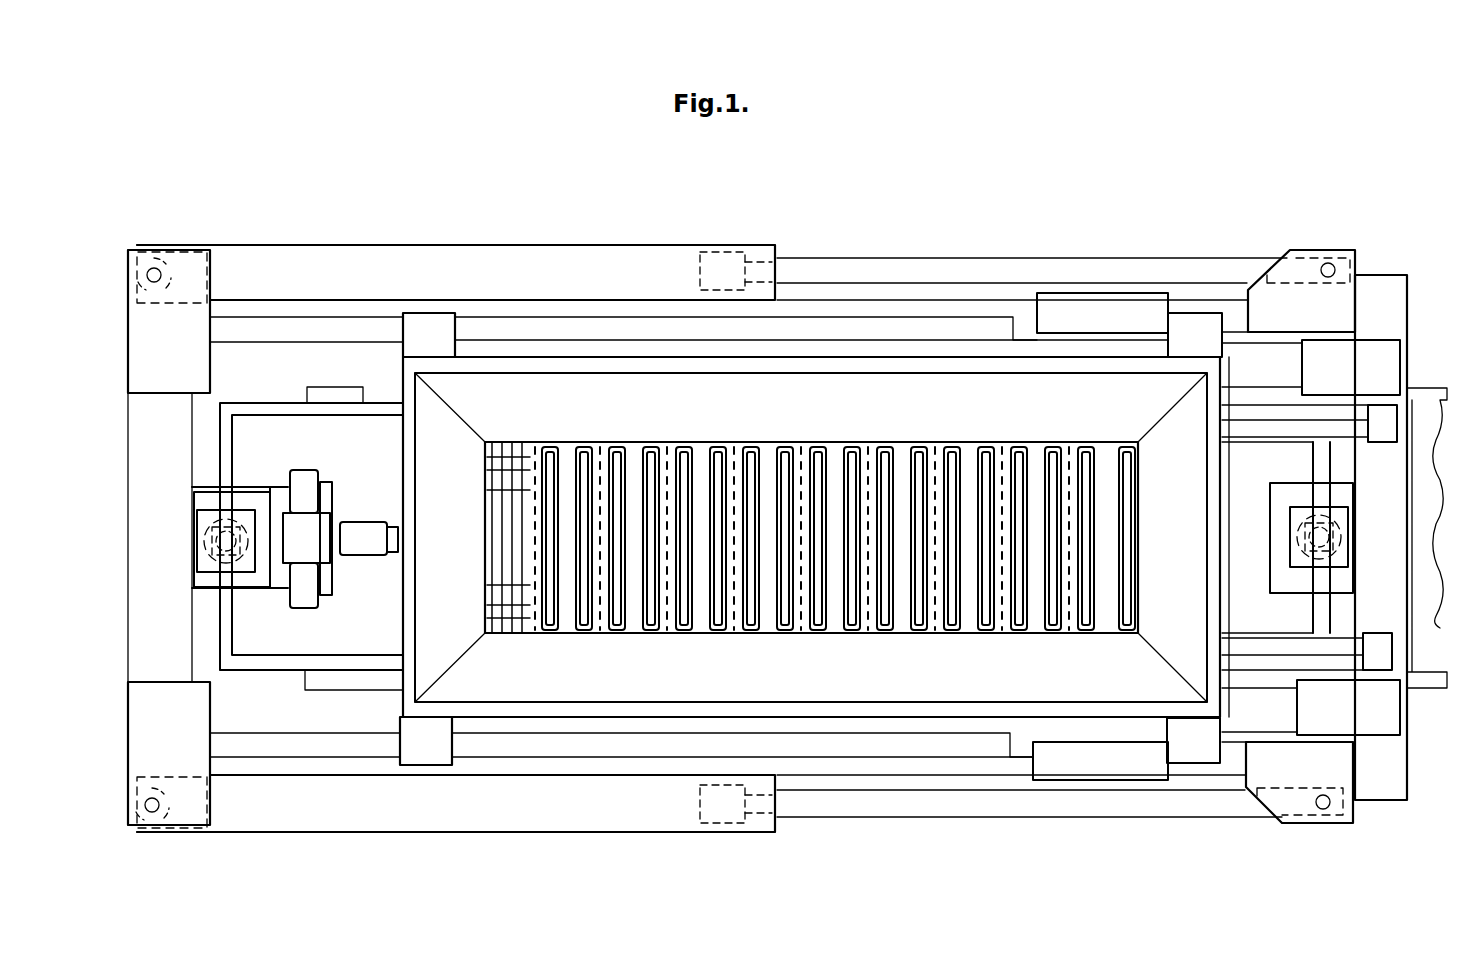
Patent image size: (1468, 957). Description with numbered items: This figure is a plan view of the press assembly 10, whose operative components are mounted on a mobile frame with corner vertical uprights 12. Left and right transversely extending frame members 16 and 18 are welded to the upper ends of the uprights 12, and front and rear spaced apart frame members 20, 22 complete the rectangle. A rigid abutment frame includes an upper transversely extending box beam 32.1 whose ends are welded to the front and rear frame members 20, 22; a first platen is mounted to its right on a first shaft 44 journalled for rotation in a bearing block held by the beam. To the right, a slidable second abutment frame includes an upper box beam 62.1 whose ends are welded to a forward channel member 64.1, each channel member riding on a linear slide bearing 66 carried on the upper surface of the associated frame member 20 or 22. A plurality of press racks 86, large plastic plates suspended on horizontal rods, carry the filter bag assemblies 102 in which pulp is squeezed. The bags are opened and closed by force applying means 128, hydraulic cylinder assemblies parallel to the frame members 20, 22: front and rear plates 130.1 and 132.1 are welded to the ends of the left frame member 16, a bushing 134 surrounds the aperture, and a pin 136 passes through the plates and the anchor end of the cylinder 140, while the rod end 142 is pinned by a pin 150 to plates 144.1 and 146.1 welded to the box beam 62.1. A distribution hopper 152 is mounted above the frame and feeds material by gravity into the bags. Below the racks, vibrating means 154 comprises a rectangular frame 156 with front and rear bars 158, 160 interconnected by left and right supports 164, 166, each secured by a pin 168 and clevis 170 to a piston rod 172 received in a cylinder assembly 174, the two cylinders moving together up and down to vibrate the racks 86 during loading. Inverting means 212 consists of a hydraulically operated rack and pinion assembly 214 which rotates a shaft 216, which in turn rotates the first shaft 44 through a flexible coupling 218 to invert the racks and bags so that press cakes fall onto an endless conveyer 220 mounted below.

The press assembly 10 is at (1208, 148).
The corner vertical uprights 12 is at (816, 537).
The left transversely extending frame member 16 is at (139, 430).
The right transversely extending frame member 18 is at (1395, 290).
The front frame member 20 is at (878, 745).
The rear frame member 22 is at (902, 320).
The upper transversely extending box beam 32.1 is at (428, 318).
The first shaft 44 is at (374, 514).
The upper transversely extending box beam 62.1 is at (1188, 316).
The forward channel member 64.1 is at (1106, 300).
The linear slide bearing 66 is at (1018, 318).
The press racks 86 is at (483, 462).
The filter bag assemblies 102 is at (748, 442).
The force applying means 128 is at (305, 245).
The front upper plate 130.1 is at (198, 717).
The rear upper plate 132.1 is at (198, 372).
The bushing 134 is at (162, 252).
The pin 136 is at (150, 264).
The cylinder 140 is at (282, 244).
The rod end 142 is at (1237, 278).
The front upper plate 144.1 is at (1338, 769).
The rear upper plate 146.1 is at (1340, 316).
The pin 150 is at (1330, 264).
The distribution hopper 152 is at (556, 355).
The vibrating means 154 is at (262, 400).
The rectangular frame 156 is at (246, 670).
The front bar 158 is at (362, 665).
The rear bar 160 is at (360, 395).
The left transversely extending support 164 is at (233, 443).
The right transversely extending support 166 is at (1312, 462).
The pin 168 is at (1311, 537).
The clevis 170 is at (198, 545).
The piston rod 172 is at (198, 562).
The cylinder assembly 174 is at (202, 503).
The inverting means 212 is at (362, 568).
The rack and pinion assembly 214 is at (342, 500).
The shaft 216 is at (338, 573).
The flexible coupling 218 is at (388, 552).
The endless conveyer 220 is at (1430, 400).